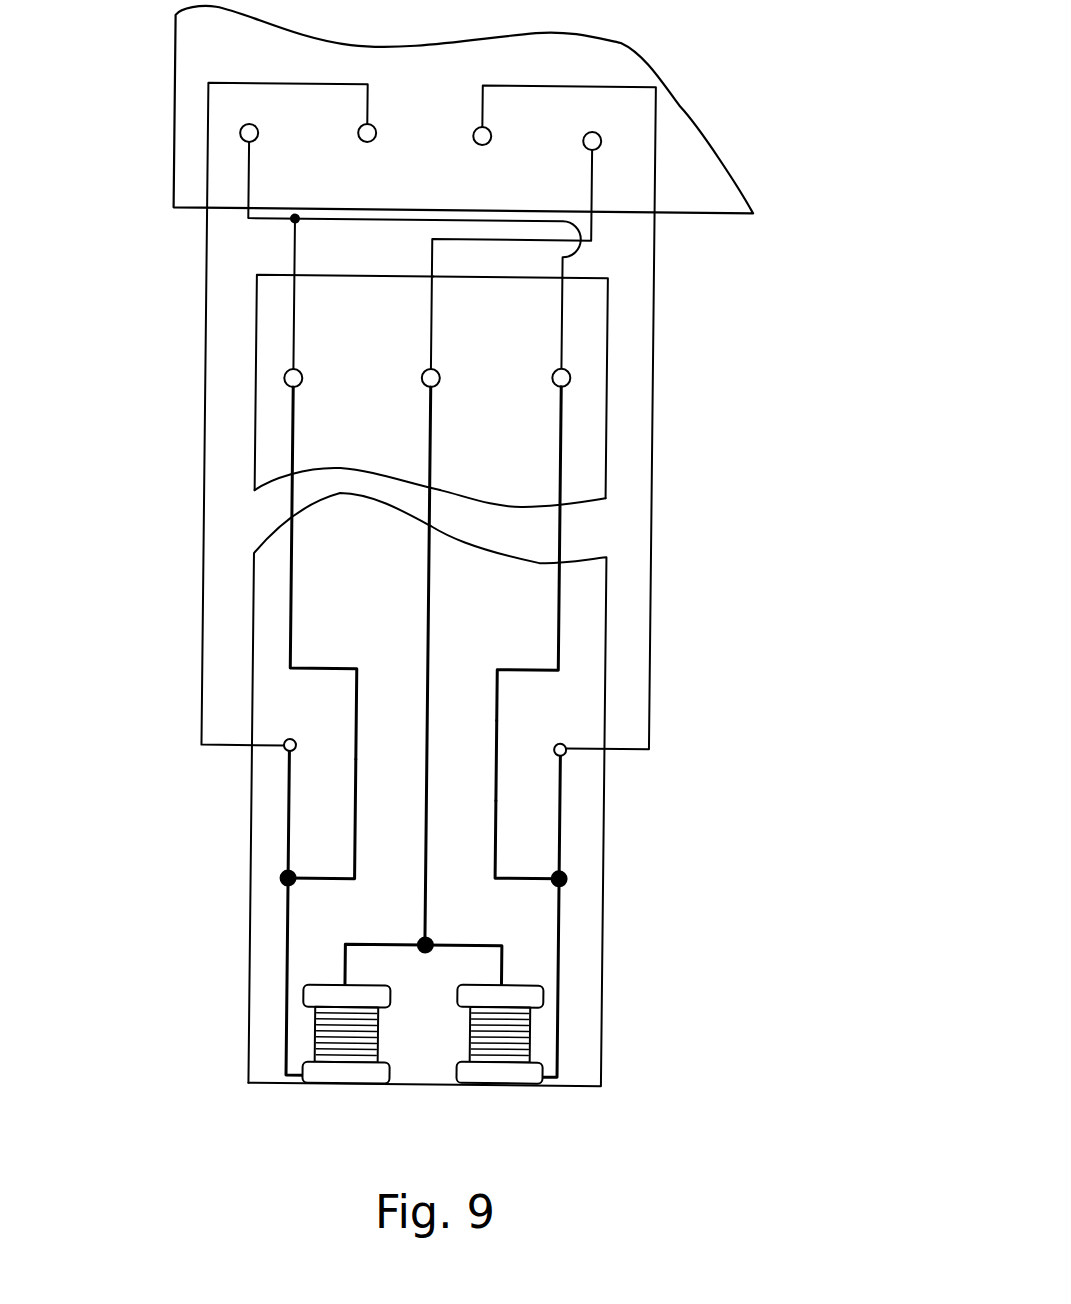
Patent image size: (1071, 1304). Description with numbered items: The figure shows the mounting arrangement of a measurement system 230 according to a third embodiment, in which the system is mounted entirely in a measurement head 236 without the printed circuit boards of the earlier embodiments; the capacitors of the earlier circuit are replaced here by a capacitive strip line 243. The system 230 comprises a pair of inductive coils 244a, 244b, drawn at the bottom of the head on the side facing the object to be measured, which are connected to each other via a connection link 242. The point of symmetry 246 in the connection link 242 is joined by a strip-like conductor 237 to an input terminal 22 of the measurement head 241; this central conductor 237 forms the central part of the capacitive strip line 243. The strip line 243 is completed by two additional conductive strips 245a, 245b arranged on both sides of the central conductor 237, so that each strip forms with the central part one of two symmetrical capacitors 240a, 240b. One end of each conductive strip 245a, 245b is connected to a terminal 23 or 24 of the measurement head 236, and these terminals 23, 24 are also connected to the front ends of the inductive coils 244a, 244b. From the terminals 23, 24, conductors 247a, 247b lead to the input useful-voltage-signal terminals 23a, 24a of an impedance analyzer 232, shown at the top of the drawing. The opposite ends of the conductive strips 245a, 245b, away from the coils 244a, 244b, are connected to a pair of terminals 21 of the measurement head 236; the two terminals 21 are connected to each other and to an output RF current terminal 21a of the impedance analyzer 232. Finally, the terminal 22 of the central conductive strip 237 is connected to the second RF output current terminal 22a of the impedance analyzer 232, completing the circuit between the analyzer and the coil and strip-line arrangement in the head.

The measurement system 230 is at (706, 665).
The impedance analyzer 232 is at (690, 147).
The measurement head 236 is at (606, 840).
The strip-like conductor 237 is at (434, 637).
The symmetrical capacitor 240a is at (350, 712).
The symmetrical capacitor 240b is at (505, 705).
The measurement head 241 is at (253, 797).
The connection link 242 is at (387, 948).
The capacitive strip line 243 is at (520, 762).
The inductive coil 244a is at (318, 1030).
The inductive coil 244b is at (530, 1035).
The conductive strip 245a is at (353, 742).
The conductive strip 245b is at (500, 735).
The point of symmetry 246 is at (473, 943).
The conductor 247a is at (203, 447).
The conductor 247b is at (656, 270).
The terminal 21 is at (293, 369).
The input terminal 22 is at (427, 387).
The terminal 23 is at (286, 742).
The terminal 24 is at (563, 745).
The output RF current terminal 21a is at (281, 159).
The second RF output current terminal 22a is at (565, 163).
The input useful-voltage-signal terminal 23a is at (380, 159).
The input useful-voltage-signal terminal 24a is at (477, 160).